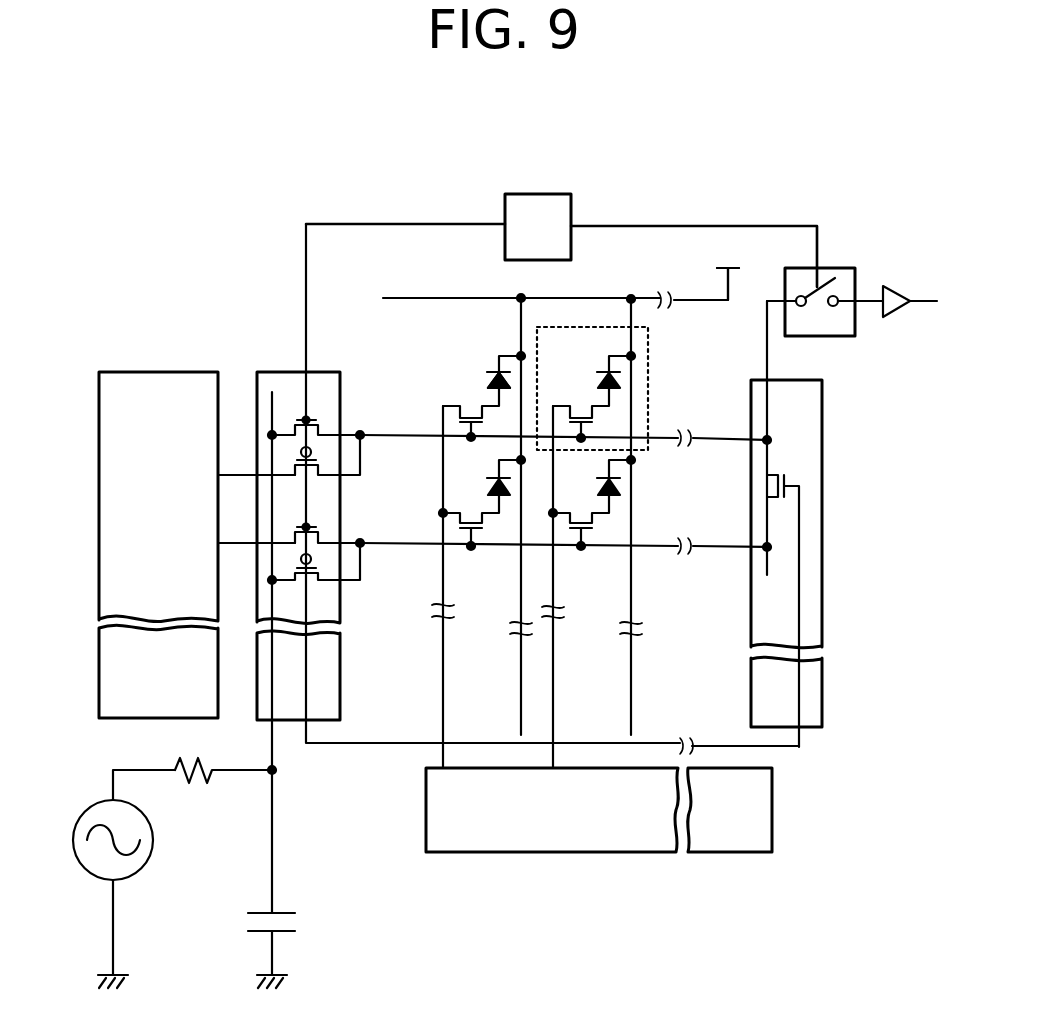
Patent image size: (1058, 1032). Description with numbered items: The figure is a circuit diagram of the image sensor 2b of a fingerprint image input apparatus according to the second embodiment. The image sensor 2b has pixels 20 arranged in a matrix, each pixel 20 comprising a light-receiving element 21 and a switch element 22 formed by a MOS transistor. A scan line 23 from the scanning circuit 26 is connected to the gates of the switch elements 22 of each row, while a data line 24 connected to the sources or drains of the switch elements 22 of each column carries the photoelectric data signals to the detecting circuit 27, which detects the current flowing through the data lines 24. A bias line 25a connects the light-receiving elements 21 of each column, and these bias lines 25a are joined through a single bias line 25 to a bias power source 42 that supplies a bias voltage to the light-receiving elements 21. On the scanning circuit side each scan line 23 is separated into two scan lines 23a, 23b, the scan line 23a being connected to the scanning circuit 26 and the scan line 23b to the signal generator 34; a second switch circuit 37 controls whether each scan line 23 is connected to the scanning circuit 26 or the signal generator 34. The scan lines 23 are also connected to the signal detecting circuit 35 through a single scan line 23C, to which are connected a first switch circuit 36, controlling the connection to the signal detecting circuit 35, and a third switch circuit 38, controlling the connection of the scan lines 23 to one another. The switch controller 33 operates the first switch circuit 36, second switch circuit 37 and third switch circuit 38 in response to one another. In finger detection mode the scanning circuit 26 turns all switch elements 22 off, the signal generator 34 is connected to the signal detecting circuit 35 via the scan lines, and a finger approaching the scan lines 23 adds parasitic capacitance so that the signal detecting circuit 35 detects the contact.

The image sensor 2b is at (447, 178).
The switch controller 33 is at (555, 194).
The bias line 25 is at (412, 298).
The bias power source 42 is at (720, 268).
The first switch circuit 36 is at (835, 268).
The signal detecting circuit 35 is at (898, 318).
The scanning circuit 26 is at (155, 372).
The second switch circuit 37 is at (280, 372).
The scan line 23b is at (332, 431).
The scan line 23a is at (328, 477).
The scan line 23 is at (417, 440).
The pixel 20 is at (649, 336).
The switch element 22 is at (581, 406).
The light-receiving element 21 is at (613, 385).
The data line 24 is at (444, 688).
The bias line 25a is at (521, 562).
The scan line 23C is at (770, 400).
The third switch circuit 38 is at (824, 440).
The detecting circuit 27 is at (773, 800).
The signal generator 34 is at (153, 845).